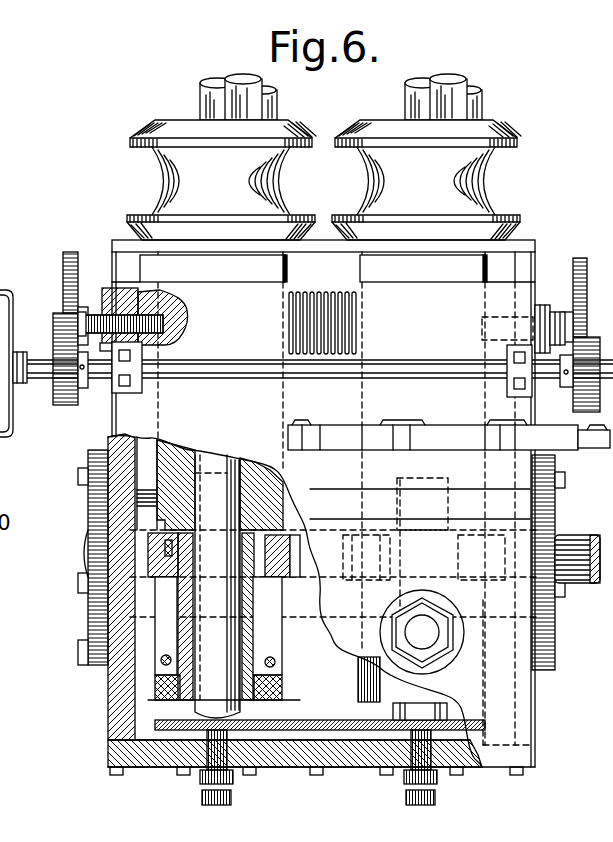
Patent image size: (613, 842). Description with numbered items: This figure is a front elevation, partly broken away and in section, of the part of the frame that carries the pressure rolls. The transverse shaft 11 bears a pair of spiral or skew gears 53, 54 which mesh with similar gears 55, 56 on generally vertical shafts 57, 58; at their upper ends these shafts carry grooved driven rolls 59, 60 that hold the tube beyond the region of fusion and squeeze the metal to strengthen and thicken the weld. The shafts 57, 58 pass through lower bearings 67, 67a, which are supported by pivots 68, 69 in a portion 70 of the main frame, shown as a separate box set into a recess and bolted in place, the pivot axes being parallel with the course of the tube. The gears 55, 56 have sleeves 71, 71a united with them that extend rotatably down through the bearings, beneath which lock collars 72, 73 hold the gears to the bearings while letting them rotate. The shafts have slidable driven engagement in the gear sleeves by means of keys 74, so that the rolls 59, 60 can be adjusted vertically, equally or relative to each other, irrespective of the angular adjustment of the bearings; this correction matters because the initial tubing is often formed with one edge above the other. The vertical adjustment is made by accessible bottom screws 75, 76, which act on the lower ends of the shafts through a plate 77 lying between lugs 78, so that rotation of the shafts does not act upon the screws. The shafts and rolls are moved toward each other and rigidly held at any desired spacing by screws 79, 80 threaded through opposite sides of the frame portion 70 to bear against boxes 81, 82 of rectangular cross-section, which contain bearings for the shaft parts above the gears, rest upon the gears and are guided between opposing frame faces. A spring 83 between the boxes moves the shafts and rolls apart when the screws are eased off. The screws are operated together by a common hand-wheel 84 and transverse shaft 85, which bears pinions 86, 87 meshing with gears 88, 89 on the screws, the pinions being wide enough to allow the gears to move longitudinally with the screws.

The transverse shaft 11 is at (576, 547).
The spiral or skew gear 53 is at (273, 675).
The spiral or skew gear 54 is at (450, 486).
The gear 55 is at (145, 547).
The gear 56 is at (492, 573).
The vertical shaft 57 is at (213, 456).
The vertical shaft 58 is at (447, 712).
The grooved driven roll 59 is at (150, 160).
The grooved driven roll 60 is at (496, 162).
The lower bearing 67 is at (90, 660).
The lower bearing 67a is at (358, 672).
The pivot 68 is at (0, 648).
The pivot 69 is at (470, 650).
The frame portion 70 is at (498, 686).
The sleeve 71 is at (170, 675).
The sleeve 71a is at (392, 592).
The lock collar 72 is at (157, 697).
The lock collar 73 is at (388, 702).
The key 74 is at (291, 514).
The bottom screw 75 is at (200, 797).
The bottom screw 76 is at (437, 797).
The plate 77 is at (284, 732).
The lug 78 is at (143, 765).
The screw 79 is at (116, 302).
The screw 80 is at (520, 315).
The box 81 is at (221, 268).
The box 82 is at (420, 268).
The spring 83 is at (370, 356).
The hand-wheel 84 is at (16, 430).
The transverse shaft 85 is at (258, 380).
The pinion 86 is at (70, 403).
The pinion 87 is at (578, 392).
The gear 88 is at (70, 252).
The gear 89 is at (582, 258).